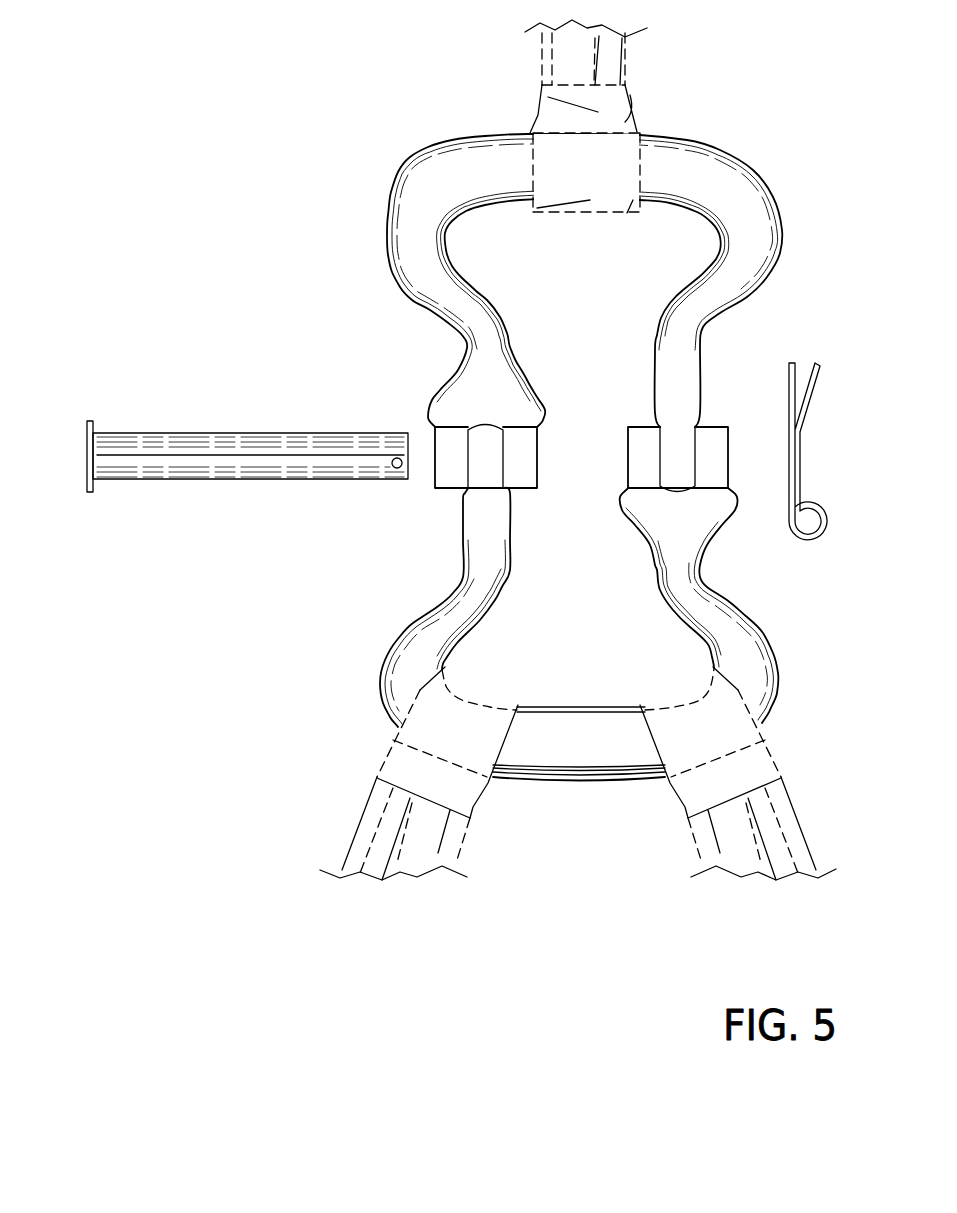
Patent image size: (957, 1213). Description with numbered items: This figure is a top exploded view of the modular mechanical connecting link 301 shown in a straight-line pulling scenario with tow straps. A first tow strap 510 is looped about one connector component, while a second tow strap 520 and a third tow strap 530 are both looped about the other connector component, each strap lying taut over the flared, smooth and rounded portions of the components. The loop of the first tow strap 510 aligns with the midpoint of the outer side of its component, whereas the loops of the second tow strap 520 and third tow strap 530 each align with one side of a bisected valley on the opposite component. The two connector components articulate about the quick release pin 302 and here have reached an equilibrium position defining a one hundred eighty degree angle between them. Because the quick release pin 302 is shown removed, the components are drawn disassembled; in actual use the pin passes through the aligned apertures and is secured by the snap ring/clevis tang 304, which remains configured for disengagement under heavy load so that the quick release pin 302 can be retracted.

The mechanical connecting link 301 is at (255, 246).
The quick release pin 302 is at (87, 437).
The snap ring/clevis tang 304 is at (822, 538).
The first tow strap 510 is at (618, 95).
The second tow strap 520 is at (383, 760).
The third tow strap 530 is at (760, 766).